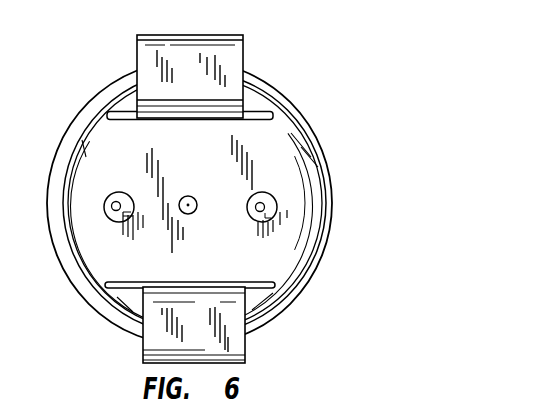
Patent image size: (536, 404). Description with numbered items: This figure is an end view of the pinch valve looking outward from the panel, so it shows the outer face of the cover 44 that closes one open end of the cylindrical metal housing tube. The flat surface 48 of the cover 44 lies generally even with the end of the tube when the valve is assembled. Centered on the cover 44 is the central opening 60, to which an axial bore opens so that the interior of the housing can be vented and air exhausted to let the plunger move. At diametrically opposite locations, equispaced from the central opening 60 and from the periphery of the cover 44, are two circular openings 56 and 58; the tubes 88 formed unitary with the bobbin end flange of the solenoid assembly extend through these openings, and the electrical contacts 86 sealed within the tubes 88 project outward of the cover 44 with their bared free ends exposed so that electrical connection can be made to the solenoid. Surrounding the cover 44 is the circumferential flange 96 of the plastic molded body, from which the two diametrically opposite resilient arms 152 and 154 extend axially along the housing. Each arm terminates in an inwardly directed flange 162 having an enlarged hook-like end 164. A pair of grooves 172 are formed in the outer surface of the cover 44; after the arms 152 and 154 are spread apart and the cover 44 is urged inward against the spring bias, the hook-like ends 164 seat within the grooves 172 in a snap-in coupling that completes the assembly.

The cover 44 is at (272, 136).
The surface of cover 48 is at (128, 159).
The circular opening 56 is at (113, 221).
The circular opening 58 is at (267, 219).
The central opening 60 is at (197, 198).
The electrical contact 86 is at (259, 208).
The tube 88 is at (113, 192).
The circumferential flange 96 is at (63, 135).
The resilient arm 152 is at (232, 33).
The resilient arm 154 is at (249, 350).
The inwardly directed flange 162 is at (137, 50).
The hook-like end 164 is at (137, 100).
The groove 172 is at (247, 110).